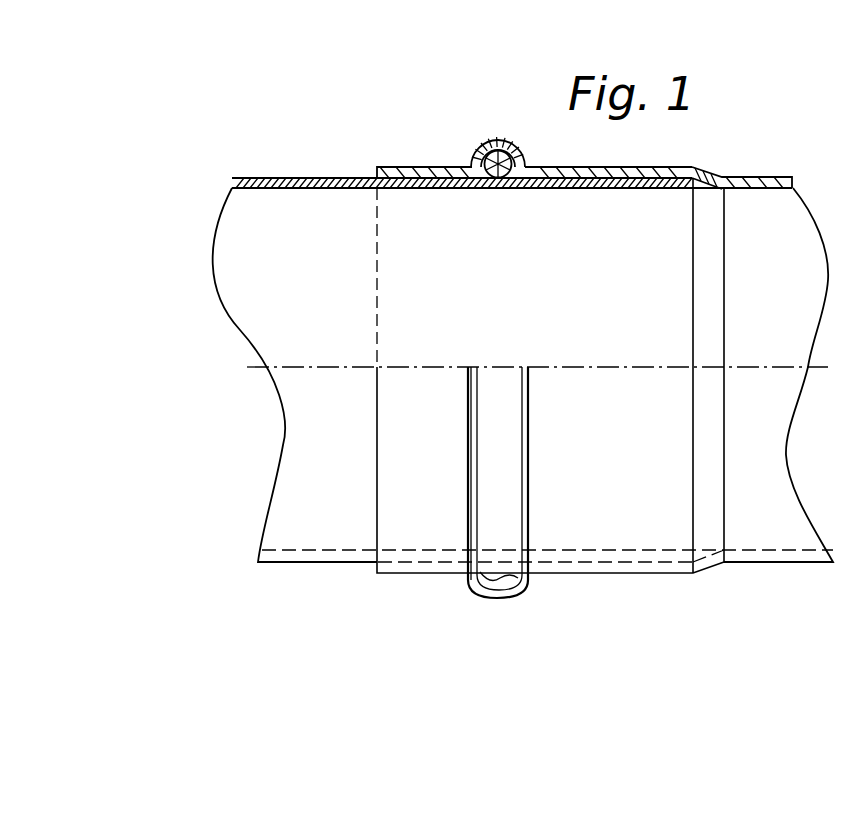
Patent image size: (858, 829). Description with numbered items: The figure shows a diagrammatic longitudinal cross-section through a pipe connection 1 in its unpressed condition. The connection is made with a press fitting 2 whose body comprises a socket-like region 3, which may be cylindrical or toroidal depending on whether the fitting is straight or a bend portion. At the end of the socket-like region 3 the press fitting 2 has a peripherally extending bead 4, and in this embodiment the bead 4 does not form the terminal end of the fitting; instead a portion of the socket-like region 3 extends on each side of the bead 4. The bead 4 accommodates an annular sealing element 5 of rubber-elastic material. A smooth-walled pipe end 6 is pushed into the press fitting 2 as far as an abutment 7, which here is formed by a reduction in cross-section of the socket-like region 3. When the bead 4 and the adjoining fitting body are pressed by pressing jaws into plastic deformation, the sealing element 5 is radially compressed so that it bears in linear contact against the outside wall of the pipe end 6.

The pipe connection 1 is at (398, 606).
The press fitting 2 is at (592, 168).
The socket-like region 3 is at (405, 167).
The bead 4 is at (496, 136).
The sealing element 5 is at (500, 178).
The pipe end 6 is at (337, 188).
The abutment 7 is at (716, 178).